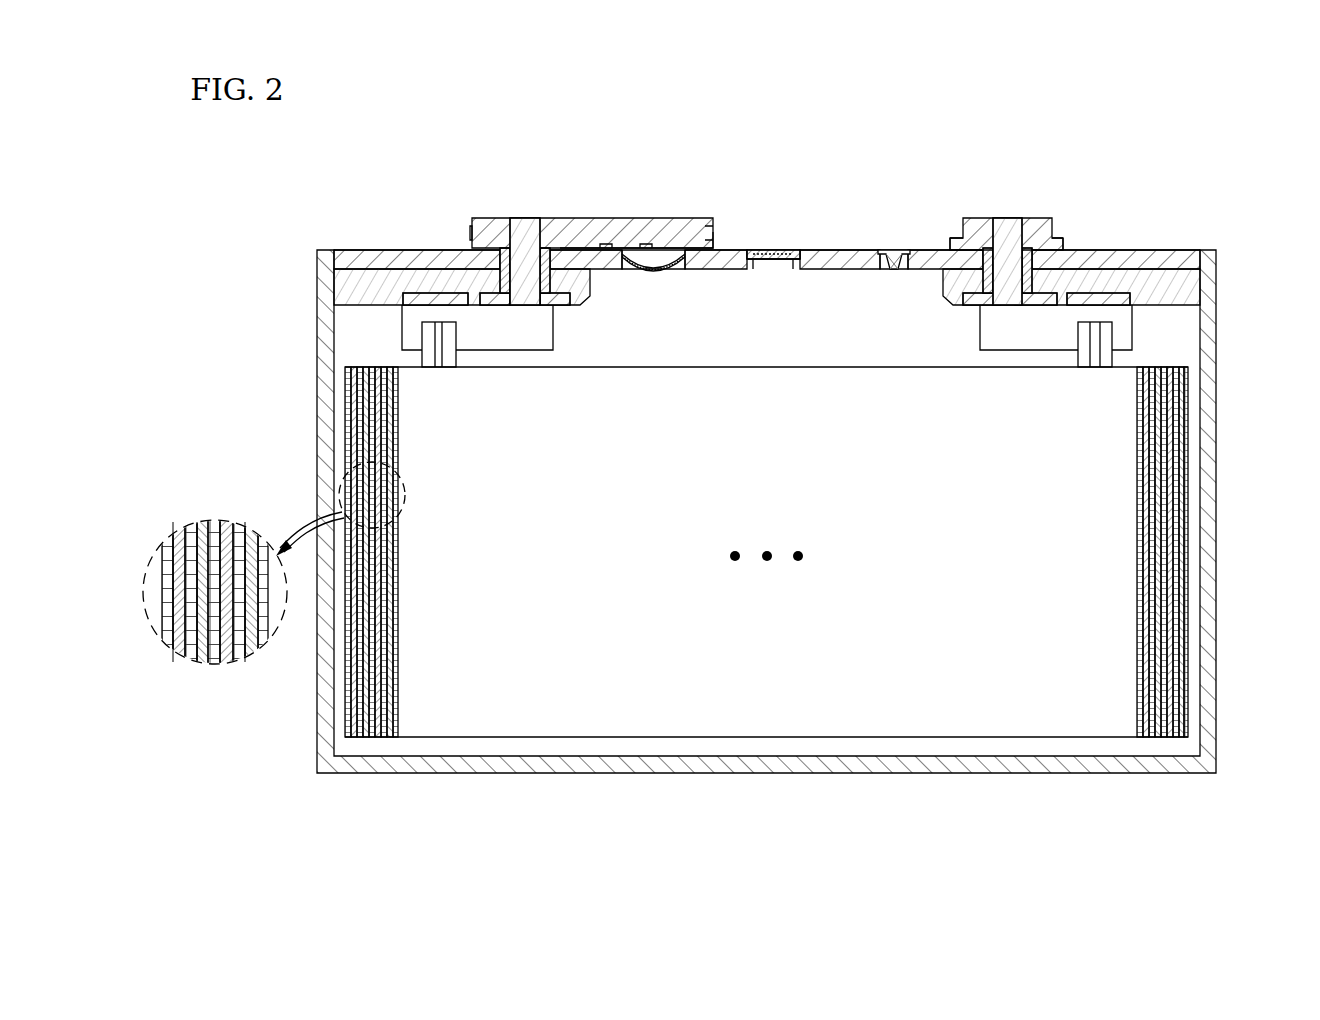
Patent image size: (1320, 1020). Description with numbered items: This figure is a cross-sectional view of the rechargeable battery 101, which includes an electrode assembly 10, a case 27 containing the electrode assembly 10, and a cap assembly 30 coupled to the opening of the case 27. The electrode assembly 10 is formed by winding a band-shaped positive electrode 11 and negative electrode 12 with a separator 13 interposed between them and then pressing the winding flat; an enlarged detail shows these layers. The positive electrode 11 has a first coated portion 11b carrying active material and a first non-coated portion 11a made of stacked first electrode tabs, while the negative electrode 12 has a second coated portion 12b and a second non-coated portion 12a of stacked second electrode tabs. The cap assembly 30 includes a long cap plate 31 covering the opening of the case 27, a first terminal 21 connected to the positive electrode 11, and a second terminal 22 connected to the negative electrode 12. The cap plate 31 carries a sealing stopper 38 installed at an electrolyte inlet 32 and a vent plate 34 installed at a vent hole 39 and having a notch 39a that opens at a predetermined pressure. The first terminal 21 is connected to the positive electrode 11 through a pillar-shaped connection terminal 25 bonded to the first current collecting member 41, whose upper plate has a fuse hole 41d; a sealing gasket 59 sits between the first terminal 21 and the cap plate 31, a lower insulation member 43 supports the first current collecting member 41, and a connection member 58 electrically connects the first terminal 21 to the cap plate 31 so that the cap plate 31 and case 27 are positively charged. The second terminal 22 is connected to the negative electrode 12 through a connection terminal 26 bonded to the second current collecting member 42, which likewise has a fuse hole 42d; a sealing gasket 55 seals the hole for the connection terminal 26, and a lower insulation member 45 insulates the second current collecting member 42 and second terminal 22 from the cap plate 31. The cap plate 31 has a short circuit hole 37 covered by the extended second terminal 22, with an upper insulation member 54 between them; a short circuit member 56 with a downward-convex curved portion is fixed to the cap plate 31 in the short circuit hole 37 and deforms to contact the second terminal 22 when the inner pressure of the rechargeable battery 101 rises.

The rechargeable battery 101 is at (838, 130).
The electrode assembly 10 is at (822, 733).
The positive electrode 11 is at (180, 650).
The negative electrode 12 is at (208, 655).
The separator 13 is at (191, 530).
The first non-coated portion 11a is at (1116, 340).
The first coated portion 11b is at (1180, 368).
The second non-coated portion 12a is at (419, 340).
The second coated portion 12b is at (1168, 368).
The first terminal 21 is at (1033, 230).
The second terminal 22 is at (488, 219).
The connection terminal 25 is at (1005, 225).
The connection terminal 26 is at (527, 228).
The case 27 is at (1212, 496).
The cap assembly 30 is at (737, 249).
The cap plate 31 is at (1180, 252).
The electrolyte inlet 32 is at (895, 270).
The vent plate 34 is at (770, 270).
The short circuit hole 37 is at (617, 250).
The sealing stopper 38 is at (895, 252).
The vent hole 39 is at (795, 252).
The notch 39a is at (770, 252).
The first current collecting member 41 is at (1120, 293).
The fuse hole 41d is at (1063, 293).
The second current collecting member 42 is at (400, 287).
The fuse hole 42d is at (472, 283).
The lower insulation member 43 is at (1195, 287).
The lower insulation member 45 is at (343, 282).
The upper insulation member 54 is at (718, 222).
The sealing gasket 55 is at (500, 262).
The short circuit member 56 is at (660, 263).
The connection member 58 is at (1060, 246).
The sealing gasket 59 is at (987, 262).